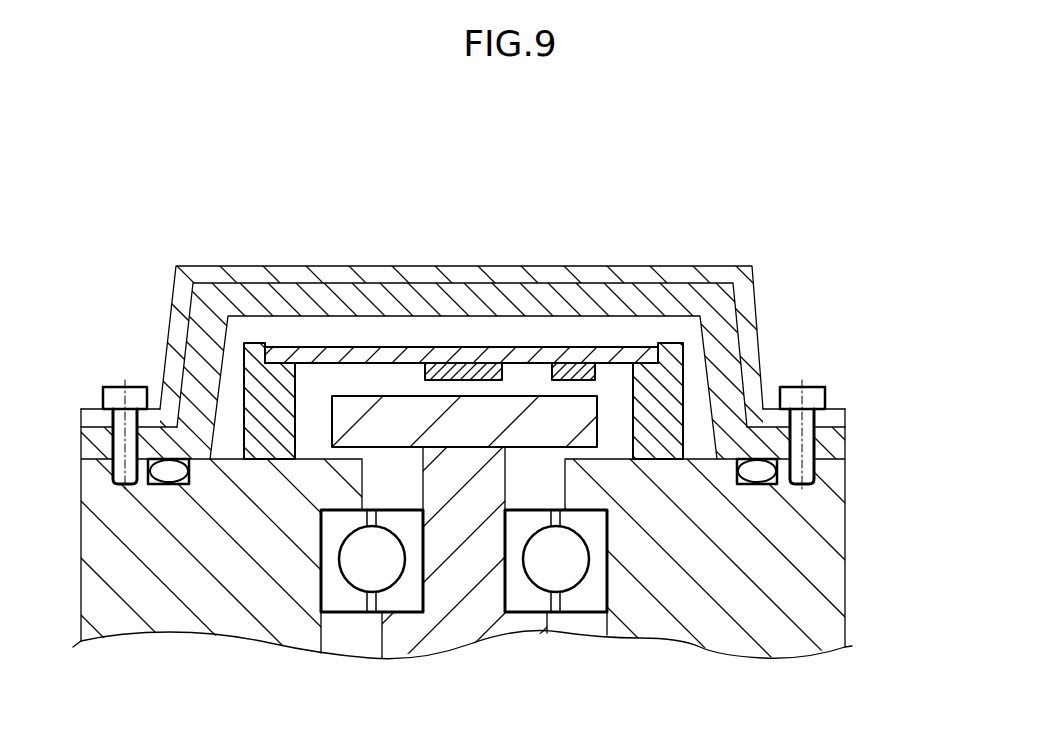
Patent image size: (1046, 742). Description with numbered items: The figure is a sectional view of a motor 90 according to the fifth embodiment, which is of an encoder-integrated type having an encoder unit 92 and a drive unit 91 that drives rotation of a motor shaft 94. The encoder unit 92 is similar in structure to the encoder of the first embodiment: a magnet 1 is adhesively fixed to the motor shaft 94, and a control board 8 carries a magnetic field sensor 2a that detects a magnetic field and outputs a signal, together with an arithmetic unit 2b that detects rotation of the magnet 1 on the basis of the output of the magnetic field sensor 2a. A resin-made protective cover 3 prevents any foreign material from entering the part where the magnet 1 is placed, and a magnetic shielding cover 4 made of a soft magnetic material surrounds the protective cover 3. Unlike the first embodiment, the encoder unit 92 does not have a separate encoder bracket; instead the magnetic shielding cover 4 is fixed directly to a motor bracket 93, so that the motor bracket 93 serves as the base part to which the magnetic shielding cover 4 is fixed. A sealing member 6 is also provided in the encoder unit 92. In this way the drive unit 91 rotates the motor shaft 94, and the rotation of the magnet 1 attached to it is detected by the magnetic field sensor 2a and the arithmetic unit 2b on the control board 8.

The magnet 1 is at (403, 420).
The magnetic field sensor 2a is at (462, 370).
The arithmetic unit 2b is at (570, 370).
The protective cover 3 is at (653, 300).
The magnetic shielding cover 4 is at (717, 277).
The sealing member 6 is at (760, 470).
The control board 8 is at (514, 355).
The motor 90 is at (108, 229).
The drive unit 91 is at (866, 507).
The encoder unit 92 is at (502, 318).
The motor bracket 93 is at (202, 600).
The motor shaft 94 is at (462, 602).